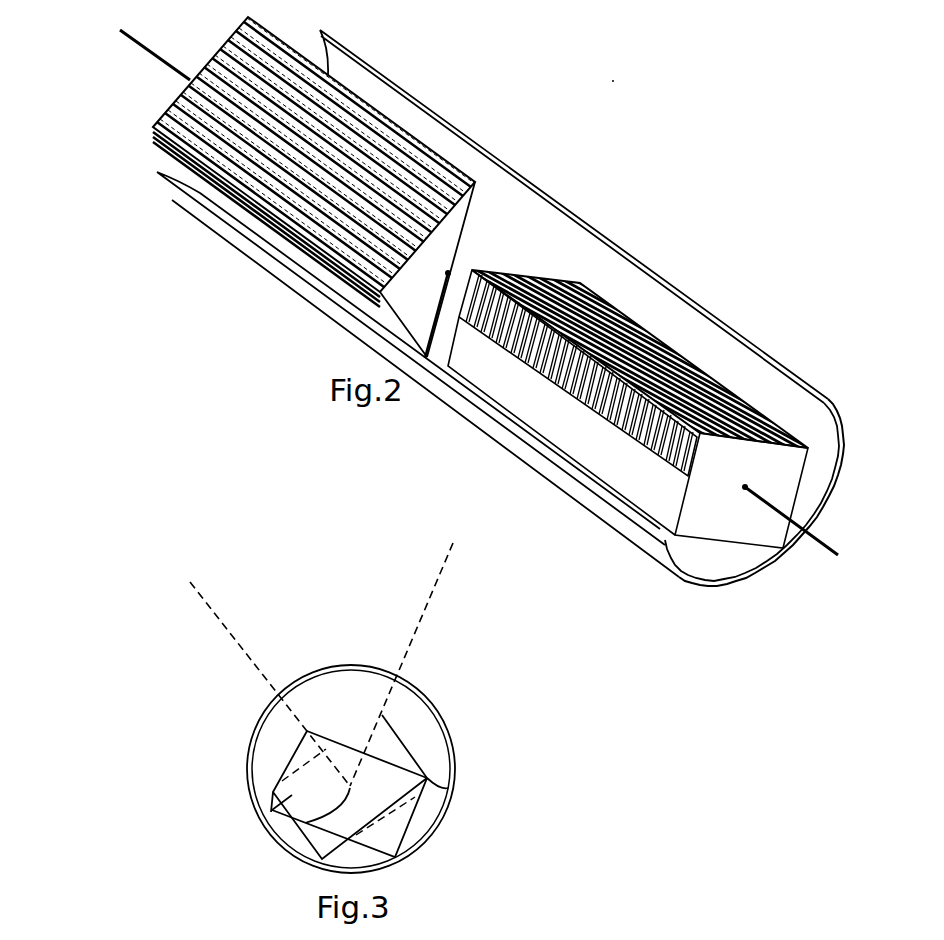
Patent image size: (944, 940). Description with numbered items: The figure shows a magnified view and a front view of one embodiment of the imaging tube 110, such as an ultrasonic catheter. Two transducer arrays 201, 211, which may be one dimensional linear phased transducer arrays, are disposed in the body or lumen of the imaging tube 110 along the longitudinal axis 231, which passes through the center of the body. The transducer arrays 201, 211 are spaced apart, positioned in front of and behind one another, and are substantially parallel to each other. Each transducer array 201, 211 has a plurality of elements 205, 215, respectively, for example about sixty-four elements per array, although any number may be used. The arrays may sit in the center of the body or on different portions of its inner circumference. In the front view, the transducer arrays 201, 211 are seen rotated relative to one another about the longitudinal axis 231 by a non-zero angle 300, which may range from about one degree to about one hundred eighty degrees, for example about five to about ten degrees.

In FIG. 2, the imaging tube 110 is at (428, 100).
In FIG. 3, the imaging tube 110 is at (445, 720).
In FIG. 2, the transducer array 201 is at (354, 187).
In FIG. 3, the transducer array 201 is at (296, 795).
In FIG. 2, the elements 205 is at (312, 227).
In FIG. 2, the transducer array 211 is at (622, 353).
In FIG. 3, the transducer array 211 is at (327, 740).
In FIG. 2, the elements 215 is at (607, 386).
In FIG. 2, the longitudinal axis 231 is at (159, 56).
In FIG. 3, the longitudinal axis 231 is at (297, 829).
In FIG. 3, the non-zero angle 300 is at (414, 630).